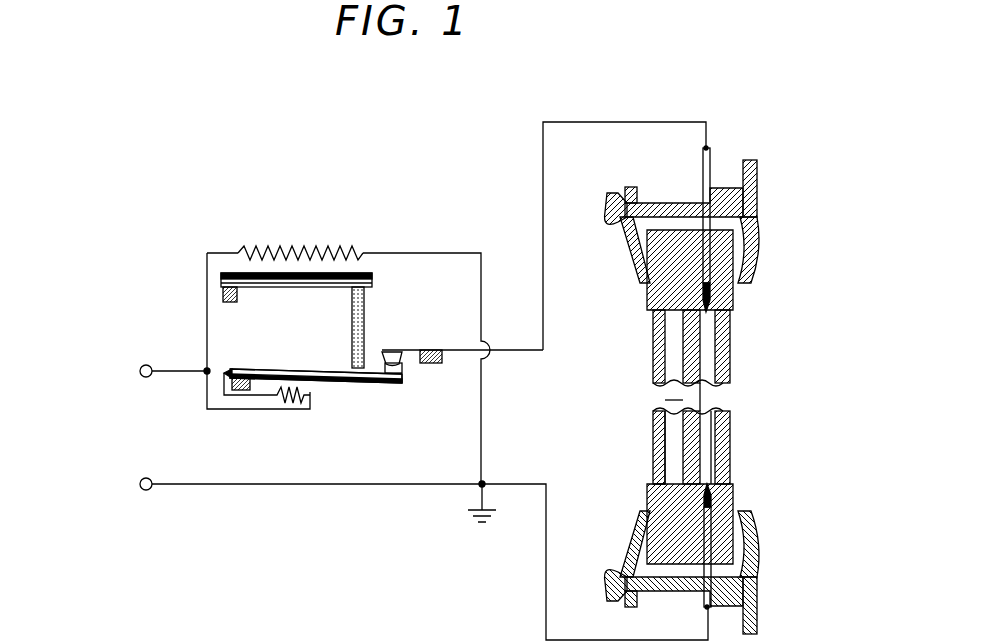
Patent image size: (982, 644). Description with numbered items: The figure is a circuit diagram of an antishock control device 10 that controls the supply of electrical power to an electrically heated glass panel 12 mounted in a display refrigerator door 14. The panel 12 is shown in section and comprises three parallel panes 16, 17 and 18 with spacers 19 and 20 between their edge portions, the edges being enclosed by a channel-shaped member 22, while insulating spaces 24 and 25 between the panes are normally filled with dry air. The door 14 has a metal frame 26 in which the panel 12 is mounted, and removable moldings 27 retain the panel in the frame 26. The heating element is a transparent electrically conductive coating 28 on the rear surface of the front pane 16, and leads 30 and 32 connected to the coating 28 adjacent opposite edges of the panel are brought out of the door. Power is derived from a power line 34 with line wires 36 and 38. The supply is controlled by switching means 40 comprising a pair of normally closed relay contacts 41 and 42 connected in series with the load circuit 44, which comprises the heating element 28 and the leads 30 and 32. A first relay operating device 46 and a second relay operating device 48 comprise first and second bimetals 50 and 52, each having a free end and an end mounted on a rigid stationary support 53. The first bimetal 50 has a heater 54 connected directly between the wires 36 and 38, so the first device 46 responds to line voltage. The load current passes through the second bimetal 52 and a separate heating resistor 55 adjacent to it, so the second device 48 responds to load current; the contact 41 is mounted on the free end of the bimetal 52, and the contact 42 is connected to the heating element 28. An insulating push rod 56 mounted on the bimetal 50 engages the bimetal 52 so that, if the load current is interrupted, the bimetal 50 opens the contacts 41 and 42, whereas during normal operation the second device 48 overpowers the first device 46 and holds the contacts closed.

The antishock control device 10 is at (243, 188).
The electrically heated glass panel 12 is at (749, 335).
The display refrigerator door 14 is at (769, 183).
The front pane 16 is at (733, 443).
The pane 17 is at (700, 404).
The pane 18 is at (654, 430).
The spacer 19 is at (735, 498).
The spacer 20 is at (667, 503).
The channel-shaped member 22 is at (762, 577).
The insulating space 24 is at (733, 455).
The insulating space 25 is at (668, 462).
The frame 26 is at (760, 228).
The removable molding 27 is at (627, 240).
The electrically conductive coating 28 is at (740, 397).
The lead 30 is at (703, 170).
The lead 32 is at (705, 608).
The power line 34 is at (142, 431).
The line wire 36 is at (163, 368).
The line wire 38 is at (241, 487).
The switching means 40 is at (433, 376).
The relay contact 41 is at (402, 380).
The relay contact 42 is at (398, 352).
The load circuit 44 is at (628, 114).
The first relay operating device 46 is at (312, 292).
The second relay operating device 48 is at (355, 386).
The first bimetal 50 is at (378, 275).
The second bimetal 52 is at (300, 368).
The stationary support 53 is at (232, 294).
The heater 54 is at (283, 247).
The heating resistor 55 is at (290, 402).
The insulating push rod 56 is at (365, 322).